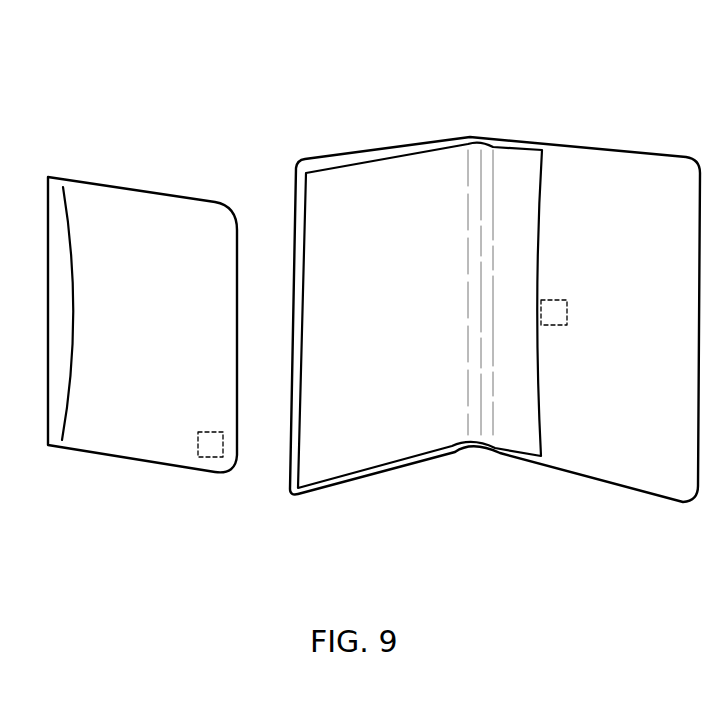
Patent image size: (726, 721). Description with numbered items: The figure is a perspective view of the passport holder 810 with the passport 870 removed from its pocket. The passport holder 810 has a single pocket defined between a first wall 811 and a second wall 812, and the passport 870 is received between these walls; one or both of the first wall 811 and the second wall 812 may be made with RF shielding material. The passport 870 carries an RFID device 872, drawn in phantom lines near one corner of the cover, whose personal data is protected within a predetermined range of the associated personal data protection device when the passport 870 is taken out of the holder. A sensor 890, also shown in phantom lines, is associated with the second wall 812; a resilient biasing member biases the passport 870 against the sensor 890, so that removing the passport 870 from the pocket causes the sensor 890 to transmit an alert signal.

The passport holder 810 is at (495, 302).
The first wall 811 is at (617, 477).
The second wall 812 is at (510, 432).
The passport 870 is at (114, 171).
The RFID device 872 is at (204, 457).
The sensor 890 is at (567, 320).